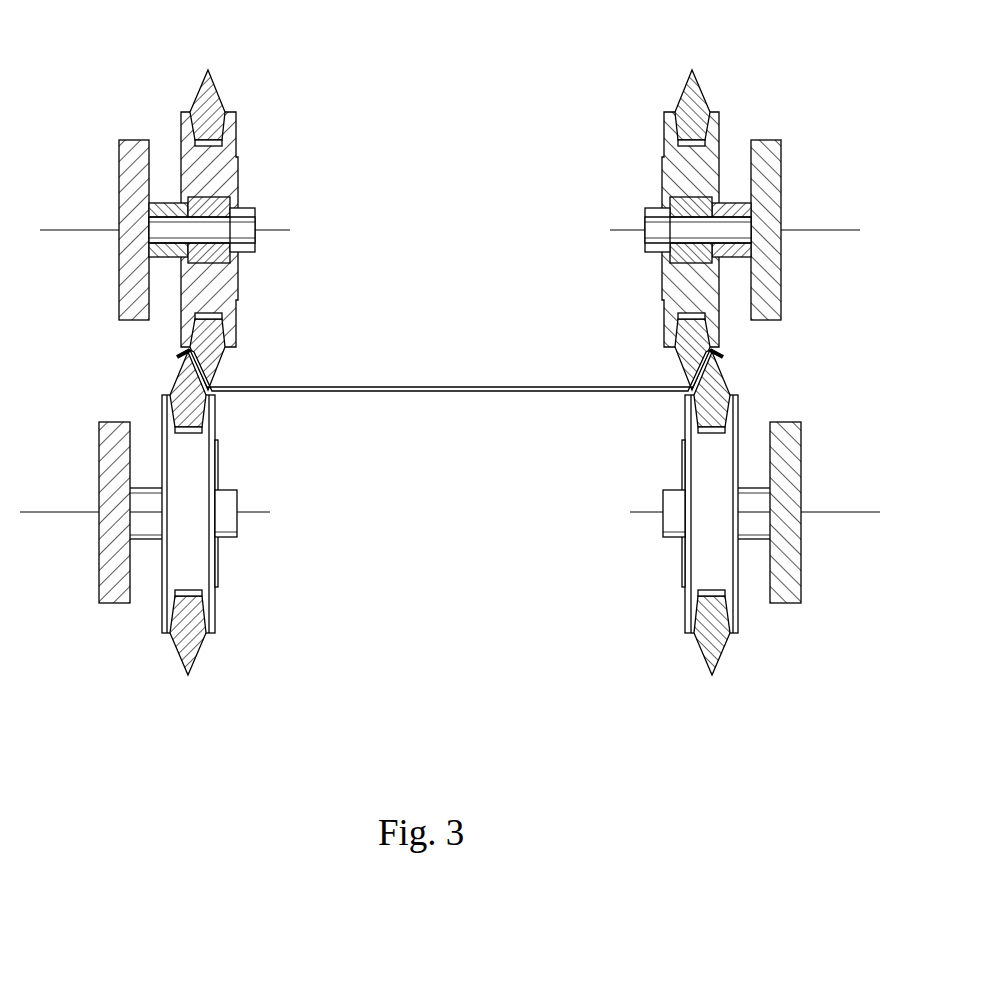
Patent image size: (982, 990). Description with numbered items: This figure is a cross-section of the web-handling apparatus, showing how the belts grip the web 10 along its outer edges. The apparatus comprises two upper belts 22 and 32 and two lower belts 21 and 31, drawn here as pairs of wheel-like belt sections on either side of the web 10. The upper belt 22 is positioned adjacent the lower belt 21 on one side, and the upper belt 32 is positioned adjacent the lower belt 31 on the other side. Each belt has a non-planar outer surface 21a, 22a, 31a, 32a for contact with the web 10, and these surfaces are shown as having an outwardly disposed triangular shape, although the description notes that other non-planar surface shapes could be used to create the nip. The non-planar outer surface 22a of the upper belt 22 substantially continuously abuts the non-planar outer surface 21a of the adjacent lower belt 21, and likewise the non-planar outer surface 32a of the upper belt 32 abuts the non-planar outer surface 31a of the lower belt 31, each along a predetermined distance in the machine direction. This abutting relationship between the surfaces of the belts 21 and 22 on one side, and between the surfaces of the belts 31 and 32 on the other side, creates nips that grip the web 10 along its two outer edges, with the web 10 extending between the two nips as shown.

The web 10 is at (419, 345).
The lower belt 21 is at (706, 643).
The upper belt 22 is at (685, 82).
The lower belt 31 is at (198, 643).
The upper belt 32 is at (215, 82).
The non-planar outer surface 21a is at (730, 372).
The non-planar outer surface 22a is at (673, 352).
The non-planar outer surface 31a is at (177, 381).
The non-planar outer surface 32a is at (220, 358).